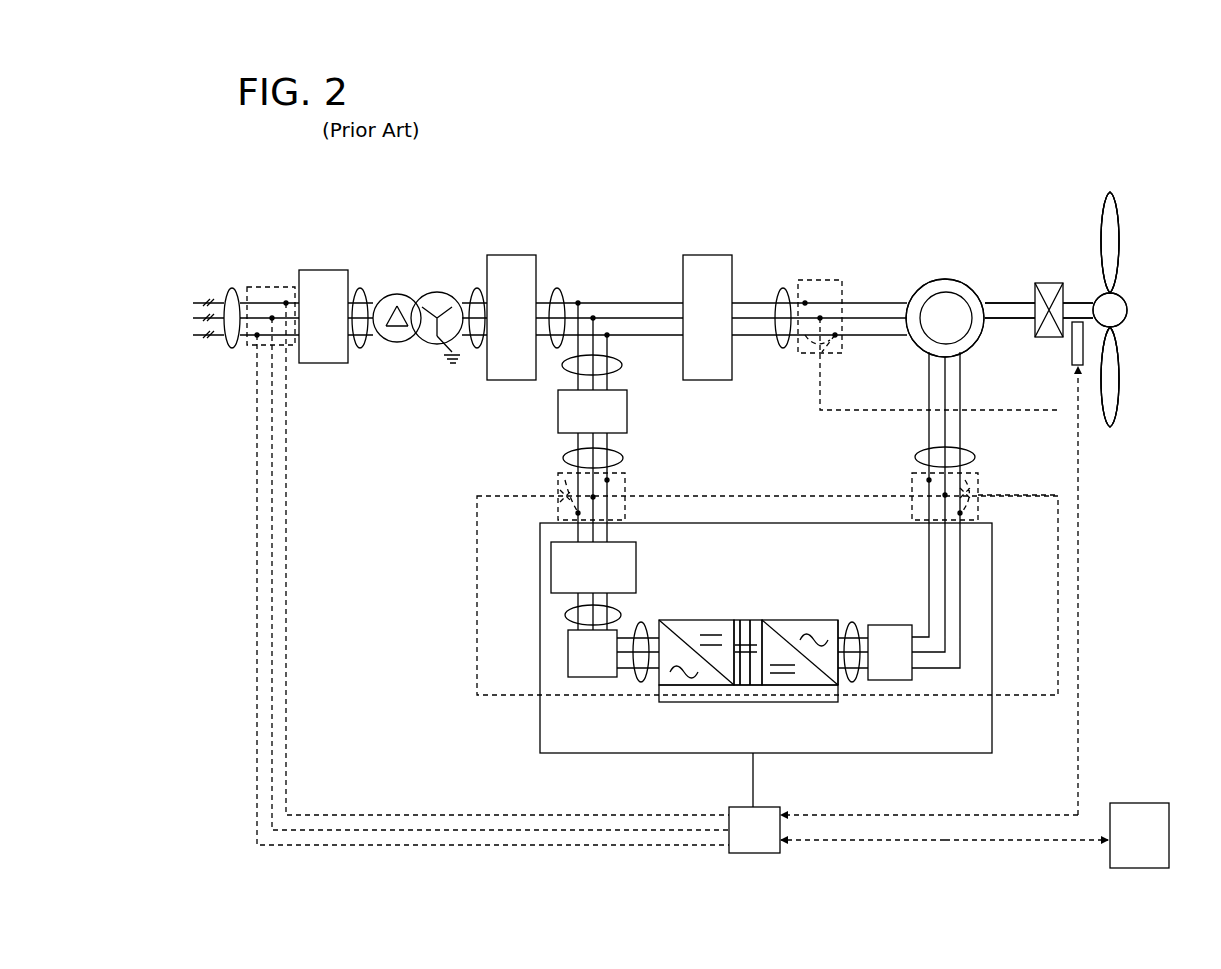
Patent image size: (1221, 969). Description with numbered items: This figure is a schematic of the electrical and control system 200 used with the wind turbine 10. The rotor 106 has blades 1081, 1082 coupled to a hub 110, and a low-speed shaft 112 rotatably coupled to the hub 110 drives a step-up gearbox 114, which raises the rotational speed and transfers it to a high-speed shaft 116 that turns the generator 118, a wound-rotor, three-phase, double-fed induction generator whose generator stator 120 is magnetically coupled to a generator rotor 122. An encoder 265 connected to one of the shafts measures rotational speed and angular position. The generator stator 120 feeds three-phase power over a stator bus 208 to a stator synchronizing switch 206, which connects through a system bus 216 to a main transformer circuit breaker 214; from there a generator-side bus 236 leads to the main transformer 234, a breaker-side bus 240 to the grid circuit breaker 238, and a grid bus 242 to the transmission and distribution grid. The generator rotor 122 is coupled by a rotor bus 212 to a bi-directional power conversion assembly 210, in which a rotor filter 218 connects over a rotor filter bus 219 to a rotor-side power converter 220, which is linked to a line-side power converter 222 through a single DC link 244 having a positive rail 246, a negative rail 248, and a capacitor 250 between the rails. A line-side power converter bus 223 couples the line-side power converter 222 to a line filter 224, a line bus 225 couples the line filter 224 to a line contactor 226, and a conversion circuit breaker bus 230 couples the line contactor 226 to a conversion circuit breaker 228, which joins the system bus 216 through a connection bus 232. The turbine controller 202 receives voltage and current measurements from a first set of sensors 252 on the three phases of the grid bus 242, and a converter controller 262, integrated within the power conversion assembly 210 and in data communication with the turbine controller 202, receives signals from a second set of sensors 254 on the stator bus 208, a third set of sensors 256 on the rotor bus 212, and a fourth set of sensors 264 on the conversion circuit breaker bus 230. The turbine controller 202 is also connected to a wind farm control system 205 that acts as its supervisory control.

The wind turbine 10 is at (1097, 178).
The rotor 106 is at (1130, 288).
The blade 1081 is at (1120, 252).
The blade 1082 is at (1120, 382).
The hub 110 is at (1127, 310).
The low-speed shaft 112 is at (1078, 303).
The step-up gearbox 114 is at (1048, 283).
The high-speed shaft 116 is at (1010, 303).
The generator 118 is at (945, 242).
The generator stator 120 is at (942, 275).
The generator rotor 122 is at (935, 300).
The electrical and control system 200 is at (278, 158).
The turbine controller 202 is at (754, 830).
The wind farm control system 205 is at (975, 835).
The stator synchronizing switch 206 is at (709, 255).
The stator bus 208 is at (783, 288).
The power conversion assembly 210 is at (993, 633).
The rotor bus 212 is at (976, 458).
The main transformer circuit breaker 214 is at (511, 255).
The system bus 216 is at (558, 287).
The rotor filter 218 is at (890, 625).
The rotor filter bus 219 is at (852, 622).
The rotor-side power converter 220 is at (838, 688).
The line-side power converter 222 is at (659, 700).
The line-side power converter bus 223 is at (642, 622).
The line filter 224 is at (568, 655).
The line bus 225 is at (565, 615).
The line contactor 226 is at (551, 568).
The conversion circuit breaker 228 is at (628, 420).
The conversion circuit breaker bus 230 is at (618, 460).
The connection bus 232 is at (618, 372).
The main transformer 234 is at (420, 294).
The generator-side bus 236 is at (477, 287).
The grid circuit breaker 238 is at (323, 270).
The breaker-side bus 240 is at (360, 287).
The grid bus 242 is at (235, 287).
The DC link 244 is at (732, 604).
The positive rail 246 is at (757, 622).
The negative rail 248 is at (758, 701).
The capacitor 250 is at (742, 625).
The first set of voltage and electric current sensors 252 is at (250, 356).
The second set of voltage and electric current sensors 254 is at (832, 279).
The third set of voltage and electric current sensors 256 is at (910, 495).
The converter controller 262 is at (800, 698).
The fourth set of voltage and electric current sensors 264 is at (626, 497).
The encoder 265 is at (1071, 350).